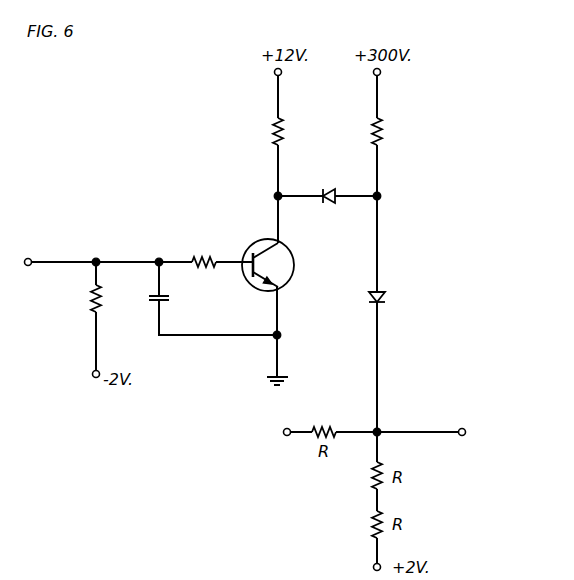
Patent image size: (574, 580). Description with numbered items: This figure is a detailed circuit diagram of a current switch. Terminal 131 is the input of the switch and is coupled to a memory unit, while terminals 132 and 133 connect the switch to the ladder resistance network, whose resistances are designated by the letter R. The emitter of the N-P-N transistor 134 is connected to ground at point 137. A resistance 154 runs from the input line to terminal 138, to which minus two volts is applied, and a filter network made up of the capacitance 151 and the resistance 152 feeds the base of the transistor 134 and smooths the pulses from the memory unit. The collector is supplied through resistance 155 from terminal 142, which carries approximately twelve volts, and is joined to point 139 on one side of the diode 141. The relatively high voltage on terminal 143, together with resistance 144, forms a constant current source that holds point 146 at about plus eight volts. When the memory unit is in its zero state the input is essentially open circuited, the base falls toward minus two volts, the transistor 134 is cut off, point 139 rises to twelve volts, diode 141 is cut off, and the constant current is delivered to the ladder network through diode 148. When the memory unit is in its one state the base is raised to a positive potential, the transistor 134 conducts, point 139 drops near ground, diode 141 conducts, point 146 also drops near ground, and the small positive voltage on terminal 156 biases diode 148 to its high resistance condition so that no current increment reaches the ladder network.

The input terminal 131 is at (29, 258).
The terminal 132 is at (284, 434).
The terminal 133 is at (466, 435).
The transistor 134 is at (298, 265).
The ground point 137 is at (284, 377).
The terminal 138 is at (92, 376).
The point 139 is at (274, 196).
The diode 141 is at (328, 188).
The terminal 142 is at (275, 74).
The terminal 143 is at (374, 74).
The resistance 144 is at (393, 136).
The point 146 is at (393, 197).
The diode 148 is at (387, 297).
The capacitance 151 is at (172, 298).
The resistance 152 is at (203, 252).
The resistance 154 is at (89, 297).
The resistance 155 is at (271, 134).
The terminal 156 is at (372, 566).